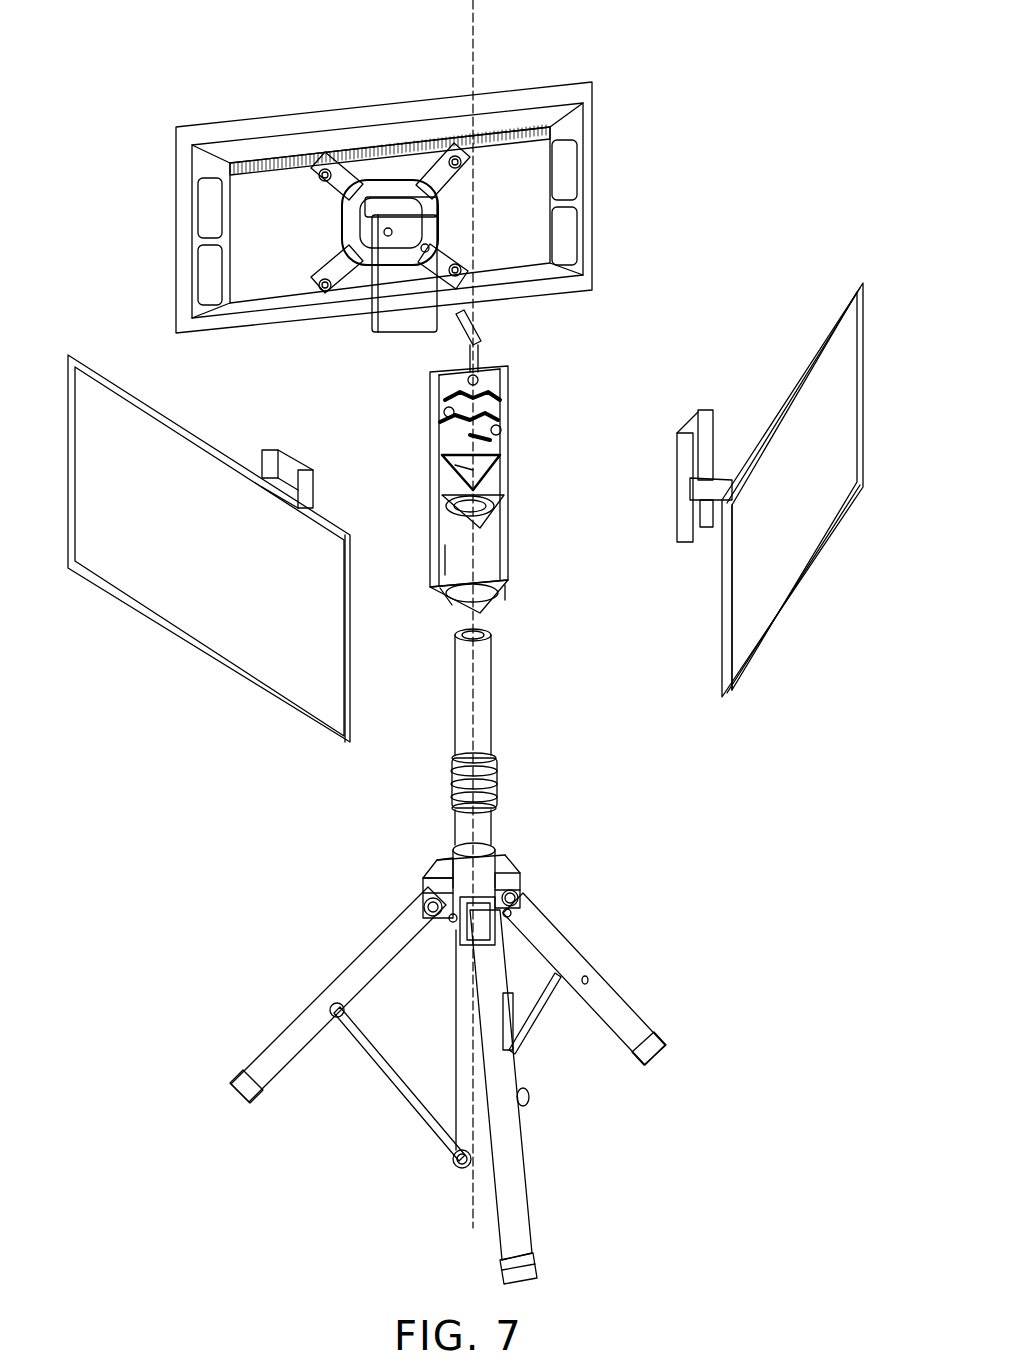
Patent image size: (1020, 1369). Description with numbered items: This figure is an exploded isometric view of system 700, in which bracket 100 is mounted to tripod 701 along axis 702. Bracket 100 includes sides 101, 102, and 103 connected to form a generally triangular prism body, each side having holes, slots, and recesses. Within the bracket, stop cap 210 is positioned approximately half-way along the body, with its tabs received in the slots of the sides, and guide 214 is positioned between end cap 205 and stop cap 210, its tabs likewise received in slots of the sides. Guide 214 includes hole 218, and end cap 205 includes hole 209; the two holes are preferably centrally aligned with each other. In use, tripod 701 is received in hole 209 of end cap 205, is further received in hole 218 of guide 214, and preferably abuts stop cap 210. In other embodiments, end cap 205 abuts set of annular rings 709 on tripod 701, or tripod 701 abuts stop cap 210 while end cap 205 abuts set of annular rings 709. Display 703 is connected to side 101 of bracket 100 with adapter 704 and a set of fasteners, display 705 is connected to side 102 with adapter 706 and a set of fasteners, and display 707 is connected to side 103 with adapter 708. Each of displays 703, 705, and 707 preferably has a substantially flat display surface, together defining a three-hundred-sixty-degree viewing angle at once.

The system 700 is at (772, 148).
The tripod 701 is at (492, 720).
The axis 702 is at (473, 23).
The display 703 is at (230, 440).
The adapter 704 is at (283, 450).
The display 705 is at (722, 600).
The adapter 706 is at (690, 420).
The display 707 is at (595, 187).
The adapter 708 is at (378, 330).
The set of annular rings 709 is at (500, 765).
The bracket 100 is at (510, 380).
The side 101 is at (432, 412).
The side 102 is at (508, 430).
The side 103 is at (485, 548).
The end cap 205 is at (445, 592).
The hole 209 is at (505, 595).
The stop cap 210 is at (463, 470).
The guide 214 is at (440, 494).
The hole 218 is at (500, 508).